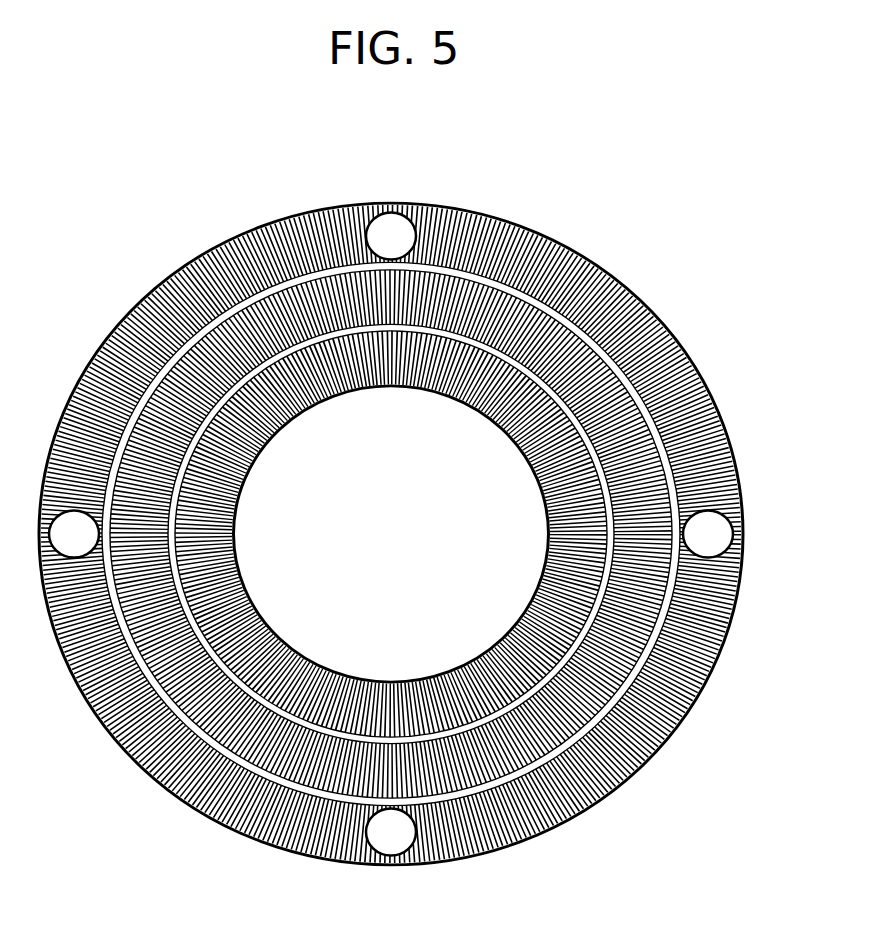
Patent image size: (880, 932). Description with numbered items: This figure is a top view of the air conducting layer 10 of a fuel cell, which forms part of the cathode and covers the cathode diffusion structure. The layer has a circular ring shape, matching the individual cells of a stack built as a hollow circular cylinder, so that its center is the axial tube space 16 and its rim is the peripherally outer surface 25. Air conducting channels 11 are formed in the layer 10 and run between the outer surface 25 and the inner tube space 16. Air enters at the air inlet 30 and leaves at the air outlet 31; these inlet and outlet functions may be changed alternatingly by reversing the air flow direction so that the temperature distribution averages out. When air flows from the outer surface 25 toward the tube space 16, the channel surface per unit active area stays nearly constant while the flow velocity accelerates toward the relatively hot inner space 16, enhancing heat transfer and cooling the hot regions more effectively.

The air conducting layer 10 is at (672, 323).
The air conducting channels 11 is at (708, 376).
The tube space 16 is at (357, 512).
The peripherally outer surface 25 is at (686, 721).
The air inlet 30 is at (290, 634).
The air outlet 31 is at (625, 280).